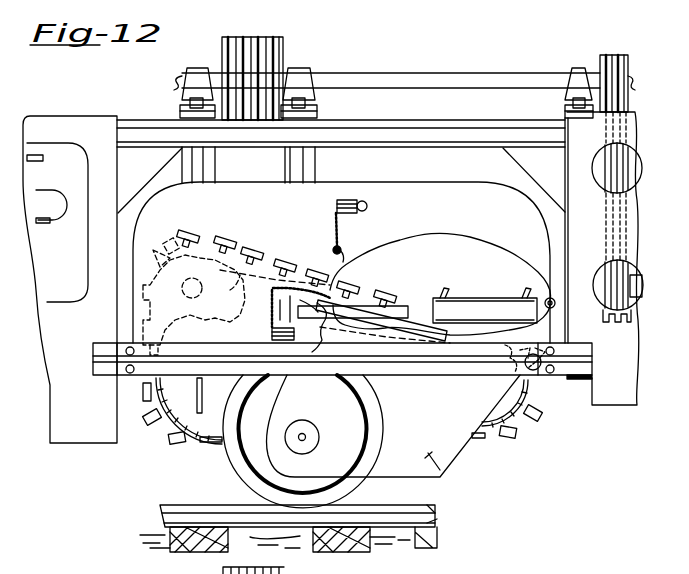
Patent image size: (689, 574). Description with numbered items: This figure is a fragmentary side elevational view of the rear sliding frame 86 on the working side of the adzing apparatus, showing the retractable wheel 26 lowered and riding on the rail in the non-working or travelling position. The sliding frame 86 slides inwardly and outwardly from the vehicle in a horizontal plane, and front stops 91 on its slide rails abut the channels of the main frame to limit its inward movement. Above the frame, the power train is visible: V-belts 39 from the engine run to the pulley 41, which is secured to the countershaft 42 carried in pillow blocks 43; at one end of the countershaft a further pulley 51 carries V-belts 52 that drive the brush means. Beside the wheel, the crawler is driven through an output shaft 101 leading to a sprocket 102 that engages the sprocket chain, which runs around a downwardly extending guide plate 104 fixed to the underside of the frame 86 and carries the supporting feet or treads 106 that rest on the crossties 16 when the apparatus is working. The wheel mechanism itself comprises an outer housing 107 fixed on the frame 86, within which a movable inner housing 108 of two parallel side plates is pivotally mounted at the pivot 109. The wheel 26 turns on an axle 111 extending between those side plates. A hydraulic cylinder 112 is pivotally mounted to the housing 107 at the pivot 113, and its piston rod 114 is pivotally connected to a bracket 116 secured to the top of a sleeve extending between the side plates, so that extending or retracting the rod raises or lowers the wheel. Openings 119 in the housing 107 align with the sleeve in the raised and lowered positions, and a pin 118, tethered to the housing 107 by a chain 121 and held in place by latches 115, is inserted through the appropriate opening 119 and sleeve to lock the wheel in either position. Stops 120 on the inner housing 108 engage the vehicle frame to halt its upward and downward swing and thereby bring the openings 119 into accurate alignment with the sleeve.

The crossties 16 is at (180, 548).
The retractable wheel 26 is at (237, 472).
The V-belts 39 is at (240, 22).
The pulley 41 is at (226, 51).
The countershaft 42 is at (431, 73).
The pillow blocks 43 is at (300, 68).
The pulley 51 is at (635, 72).
The V-belts 52 is at (610, 55).
The rear sliding frame 86 is at (354, 196).
The front stops 91 is at (575, 355).
The output shaft 101 is at (182, 325).
The sprocket 102 is at (206, 277).
The guide plate 104 is at (193, 408).
The supporting feet or treads 106 is at (172, 445).
The housing 107 is at (275, 224).
The inner housing 108 is at (419, 434).
The pivot 109 is at (508, 361).
The axle 111 is at (308, 436).
The hydraulic cylinder 112 is at (474, 303).
The pivot 113 is at (556, 305).
The piston rod 114 is at (374, 322).
The latches 115 is at (357, 203).
The bracket 116 is at (301, 307).
The pin 118 is at (326, 337).
The openings 119 is at (367, 206).
The stops 120 is at (445, 466).
The chain 121 is at (358, 237).